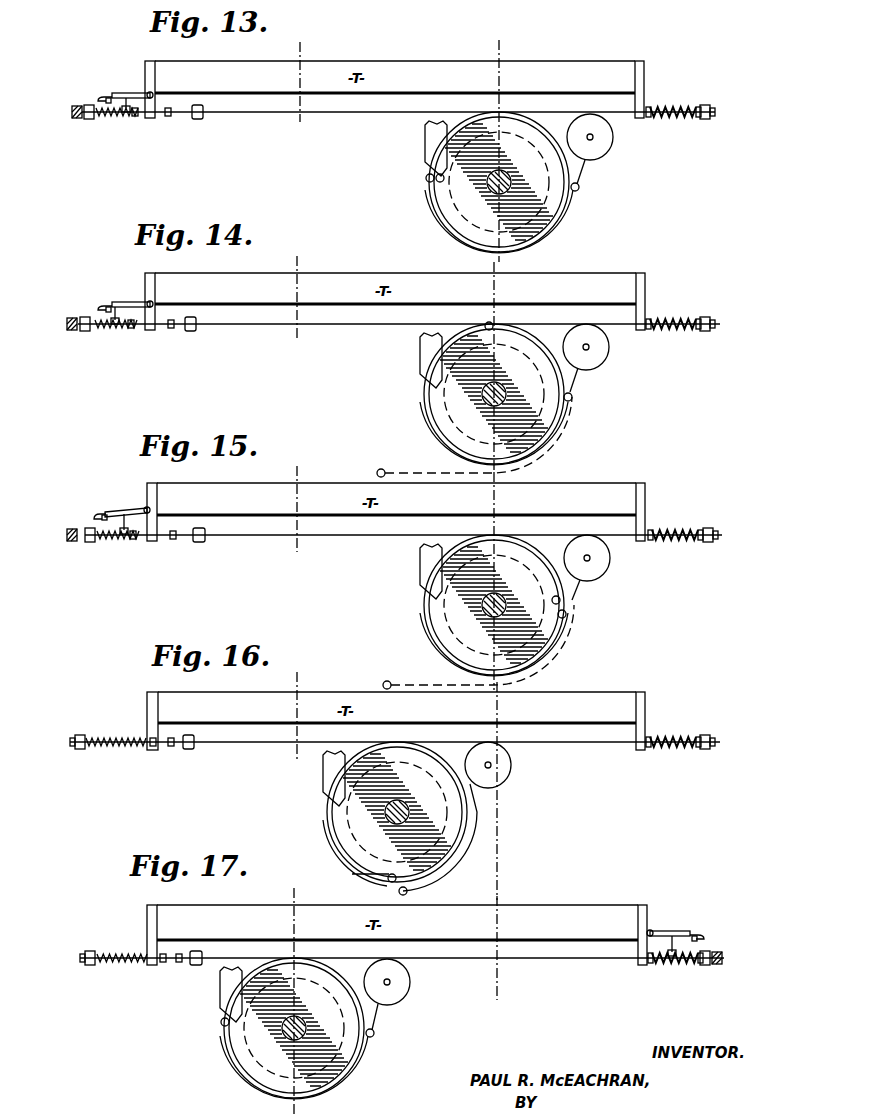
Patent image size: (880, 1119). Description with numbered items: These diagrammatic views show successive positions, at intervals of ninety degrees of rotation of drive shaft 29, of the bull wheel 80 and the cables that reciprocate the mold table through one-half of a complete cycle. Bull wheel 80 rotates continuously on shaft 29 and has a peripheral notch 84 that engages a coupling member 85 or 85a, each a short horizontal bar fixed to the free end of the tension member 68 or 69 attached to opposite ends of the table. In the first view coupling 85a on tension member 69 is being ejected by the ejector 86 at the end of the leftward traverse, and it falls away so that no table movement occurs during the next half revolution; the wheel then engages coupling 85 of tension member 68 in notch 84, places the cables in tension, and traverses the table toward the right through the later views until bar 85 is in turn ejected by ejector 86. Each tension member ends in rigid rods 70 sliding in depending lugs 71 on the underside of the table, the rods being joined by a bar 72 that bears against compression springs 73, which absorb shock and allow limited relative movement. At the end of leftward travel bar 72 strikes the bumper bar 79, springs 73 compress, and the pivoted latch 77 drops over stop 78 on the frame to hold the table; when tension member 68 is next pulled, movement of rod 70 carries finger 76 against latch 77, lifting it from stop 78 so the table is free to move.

In FIG. 13, the drive shaft 29 is at (512, 186).
In FIG. 14, the drive shaft 29 is at (484, 398).
In FIG. 15, the drive shaft 29 is at (482, 612).
In FIG. 16, the drive shaft 29 is at (386, 818).
In FIG. 17, the drive shaft 29 is at (282, 1034).
In FIG. 13, the tension member 68 is at (335, 113).
In FIG. 14, the tension member 68 is at (270, 326).
In FIG. 15, the tension member 68 is at (295, 537).
In FIG. 16, the tension member 68 is at (260, 744).
In FIG. 17, the tension member 68 is at (236, 1072).
In FIG. 13, the tension member 69 is at (565, 226).
In FIG. 14, the tension member 69 is at (420, 473).
In FIG. 15, the tension member 69 is at (604, 540).
In FIG. 16, the tension member 69 is at (488, 772).
In FIG. 17, the tension member 69 is at (486, 960).
In FIG. 13, the rods 70 is at (178, 118).
In FIG. 14, the rods 70 is at (182, 331).
In FIG. 15, the rods 70 is at (186, 542).
In FIG. 16, the rods 70 is at (108, 748).
In FIG. 17, the rods 70 is at (176, 966).
In FIG. 13, the depending lugs 71 is at (646, 100).
In FIG. 14, the depending lugs 71 is at (148, 330).
In FIG. 15, the depending lugs 71 is at (152, 542).
In FIG. 16, the depending lugs 71 is at (146, 728).
In FIG. 17, the depending lugs 71 is at (146, 952).
In FIG. 13, the bar 72 is at (88, 120).
In FIG. 14, the bar 72 is at (84, 332).
In FIG. 15, the bar 72 is at (88, 543).
In FIG. 16, the bar 72 is at (74, 742).
In FIG. 17, the bar 72 is at (89, 966).
In FIG. 13, the compression springs 73 is at (112, 116).
In FIG. 14, the compression springs 73 is at (108, 330).
In FIG. 15, the compression springs 73 is at (116, 543).
In FIG. 16, the compression springs 73 is at (102, 738).
In FIG. 17, the compression springs 73 is at (110, 954).
In FIG. 13, the finger 76 is at (125, 96).
In FIG. 14, the finger 76 is at (112, 312).
In FIG. 15, the finger 76 is at (120, 522).
In FIG. 17, the finger 76 is at (676, 948).
In FIG. 13, the pivoted latch 77 is at (130, 93).
In FIG. 14, the pivoted latch 77 is at (124, 302).
In FIG. 15, the pivoted latch 77 is at (122, 511).
In FIG. 17, the pivoted latch 77 is at (670, 931).
In FIG. 13, the stop 78 is at (104, 97).
In FIG. 14, the stop 78 is at (105, 306).
In FIG. 15, the stop 78 is at (100, 514).
In FIG. 17, the stop 78 is at (698, 935).
In FIG. 13, the bumper bar 79 is at (73, 108).
In FIG. 14, the bumper bar 79 is at (68, 322).
In FIG. 15, the bumper bar 79 is at (66, 534).
In FIG. 17, the bumper bar 79 is at (722, 955).
In FIG. 13, the bull wheel 80 is at (462, 203).
In FIG. 14, the bull wheel 80 is at (432, 404).
In FIG. 15, the bull wheel 80 is at (430, 602).
In FIG. 16, the bull wheel 80 is at (334, 826).
In FIG. 17, the bull wheel 80 is at (258, 1072).
In FIG. 13, the peripheral notch 84 is at (444, 178).
In FIG. 14, the peripheral notch 84 is at (494, 326).
In FIG. 15, the peripheral notch 84 is at (552, 600).
In FIG. 13, the coupling member 85 is at (580, 188).
In FIG. 14, the coupling member 85 is at (574, 397).
In FIG. 15, the coupling member 85 is at (566, 616).
In FIG. 16, the coupling member 85 is at (388, 880).
In FIG. 17, the coupling member 85 is at (220, 1023).
In FIG. 13, the coupling member 85a is at (426, 178).
In FIG. 14, the coupling member 85a is at (382, 469).
In FIG. 15, the coupling member 85a is at (388, 681).
In FIG. 16, the coupling member 85a is at (408, 890).
In FIG. 17, the coupling member 85a is at (376, 1032).
In FIG. 13, the ejector 86 is at (432, 150).
In FIG. 14, the ejector 86 is at (426, 370).
In FIG. 15, the ejector 86 is at (424, 570).
In FIG. 16, the ejector 86 is at (328, 768).
In FIG. 17, the ejector 86 is at (224, 992).